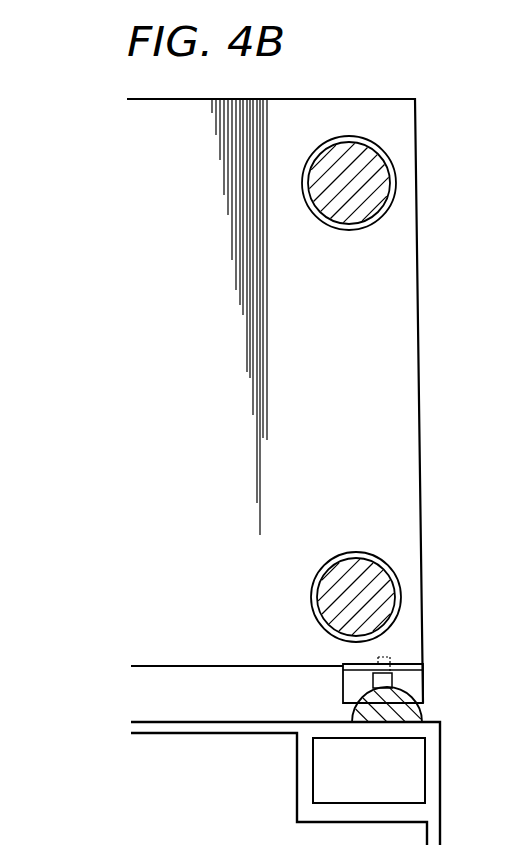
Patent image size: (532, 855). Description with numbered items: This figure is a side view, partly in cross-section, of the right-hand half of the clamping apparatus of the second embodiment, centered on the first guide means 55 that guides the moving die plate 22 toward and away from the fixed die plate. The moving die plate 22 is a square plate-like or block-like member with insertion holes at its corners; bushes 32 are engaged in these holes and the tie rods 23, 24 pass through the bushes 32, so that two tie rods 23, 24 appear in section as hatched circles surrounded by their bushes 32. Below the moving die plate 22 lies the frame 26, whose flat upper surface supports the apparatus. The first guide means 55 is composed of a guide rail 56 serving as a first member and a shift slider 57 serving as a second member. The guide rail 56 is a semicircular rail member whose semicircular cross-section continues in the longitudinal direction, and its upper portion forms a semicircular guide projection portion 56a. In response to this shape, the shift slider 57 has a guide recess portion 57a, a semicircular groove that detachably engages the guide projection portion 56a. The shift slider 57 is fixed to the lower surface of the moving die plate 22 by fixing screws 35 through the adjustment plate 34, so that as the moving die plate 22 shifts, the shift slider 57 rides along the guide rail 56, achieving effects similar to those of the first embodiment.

The moving die plate 22 is at (281, 124).
The tie rod 23 is at (356, 184).
The tie rod 24 is at (372, 593).
The frame 26 is at (435, 789).
The bush 32 is at (348, 230).
The adjustment plate 34 is at (429, 668).
The fixing screw 35 is at (380, 661).
The first guide means 55 is at (440, 690).
The guide rail 56 is at (383, 714).
The guide projection portion 56a is at (346, 697).
The shift slider 57 is at (410, 681).
The guide recess portion 57a is at (366, 683).